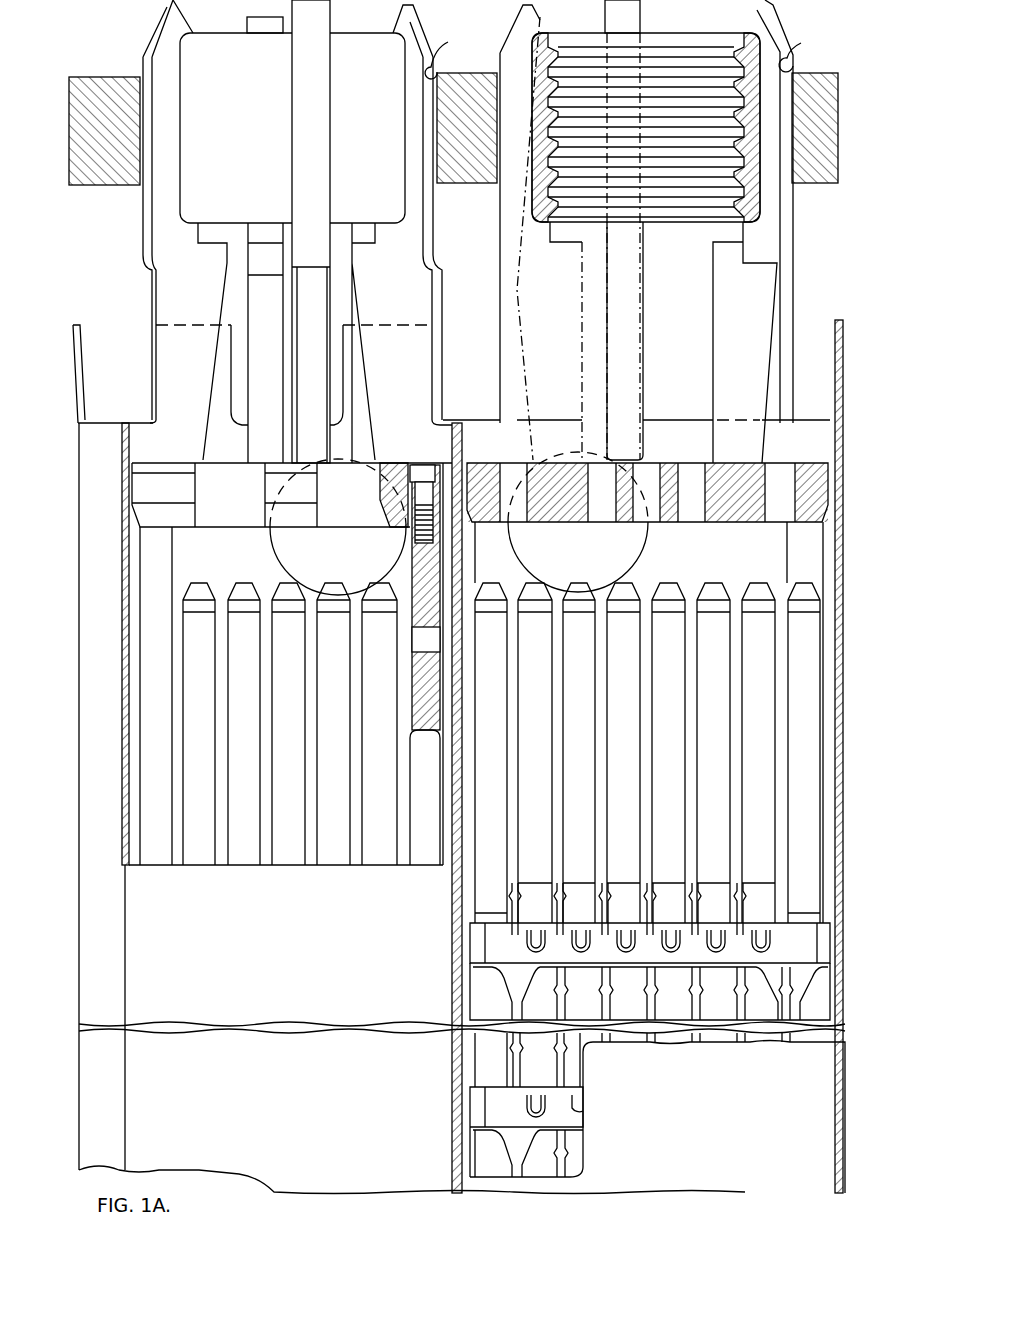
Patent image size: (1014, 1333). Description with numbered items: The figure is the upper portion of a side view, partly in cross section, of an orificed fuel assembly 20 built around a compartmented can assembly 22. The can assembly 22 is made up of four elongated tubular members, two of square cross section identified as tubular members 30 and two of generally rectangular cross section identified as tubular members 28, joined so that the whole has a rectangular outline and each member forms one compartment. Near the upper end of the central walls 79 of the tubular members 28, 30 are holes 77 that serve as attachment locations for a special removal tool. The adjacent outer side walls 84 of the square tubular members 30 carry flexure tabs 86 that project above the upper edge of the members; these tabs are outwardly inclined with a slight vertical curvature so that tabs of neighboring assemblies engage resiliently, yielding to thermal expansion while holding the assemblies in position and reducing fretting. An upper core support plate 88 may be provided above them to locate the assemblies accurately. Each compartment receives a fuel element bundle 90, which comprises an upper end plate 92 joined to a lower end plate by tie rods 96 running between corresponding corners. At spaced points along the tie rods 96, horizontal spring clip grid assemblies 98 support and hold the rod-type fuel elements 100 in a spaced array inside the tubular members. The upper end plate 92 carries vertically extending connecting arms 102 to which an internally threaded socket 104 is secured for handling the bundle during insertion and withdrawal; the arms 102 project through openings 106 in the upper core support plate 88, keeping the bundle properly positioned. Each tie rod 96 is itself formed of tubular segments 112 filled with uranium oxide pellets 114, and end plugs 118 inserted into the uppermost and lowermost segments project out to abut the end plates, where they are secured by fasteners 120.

The fuel assembly 20 is at (232, 25).
The compartmented can assembly 22 is at (80, 782).
The tubular member of rectangular cross section 28 is at (122, 624).
The tubular member of square cross section 30 is at (78, 572).
The holes 77 is at (272, 535).
The central walls 79 is at (462, 723).
The outer side walls 84 is at (78, 445).
The flexure tabs 86 is at (152, 325).
The upper core support plate 88 is at (100, 80).
The fuel element bundles 90 is at (140, 688).
The upper end plate 92 is at (135, 489).
The tie rods 96 is at (437, 583).
The spring clip grid assemblies 98 is at (470, 942).
The rod-type fuel elements 100 is at (377, 856).
The connecting arms 102 is at (257, 258).
The internally threaded socket 104 is at (349, 48).
The openings 106 is at (632, 55).
The tubular segments 112 is at (408, 753).
The uranium oxide pellets 114 is at (417, 721).
The end plugs 118 is at (417, 556).
The fasteners 120 is at (417, 466).